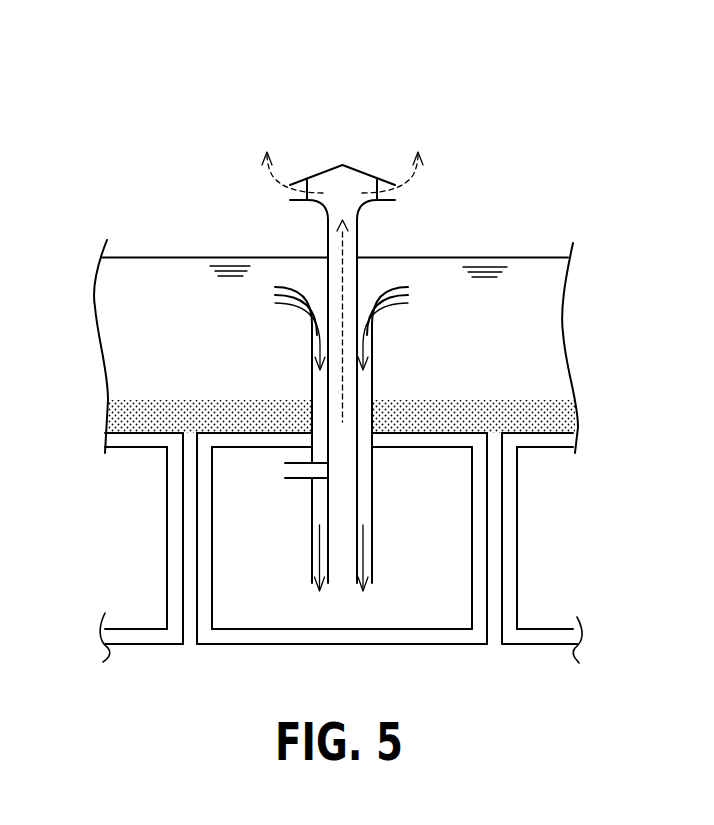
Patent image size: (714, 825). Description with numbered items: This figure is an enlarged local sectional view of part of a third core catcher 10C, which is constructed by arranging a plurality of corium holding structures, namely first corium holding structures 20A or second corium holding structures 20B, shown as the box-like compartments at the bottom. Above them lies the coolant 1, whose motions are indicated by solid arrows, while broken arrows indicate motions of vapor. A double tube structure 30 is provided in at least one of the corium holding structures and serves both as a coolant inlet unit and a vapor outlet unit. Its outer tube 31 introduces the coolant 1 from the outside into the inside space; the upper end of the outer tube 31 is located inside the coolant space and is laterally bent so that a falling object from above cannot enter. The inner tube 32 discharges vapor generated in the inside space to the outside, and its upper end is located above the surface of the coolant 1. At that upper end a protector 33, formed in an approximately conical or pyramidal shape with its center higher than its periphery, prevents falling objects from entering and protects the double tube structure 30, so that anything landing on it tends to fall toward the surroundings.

The coolant 1 is at (158, 268).
The third core catcher 10C is at (558, 214).
The first corium holding structure 20A is at (341, 570).
The second corium holding structure 20B is at (271, 645).
The double tube structure 30 is at (342, 141).
The outer tube 31 is at (372, 358).
The inner tube 32 is at (357, 232).
The protector 33 is at (330, 170).